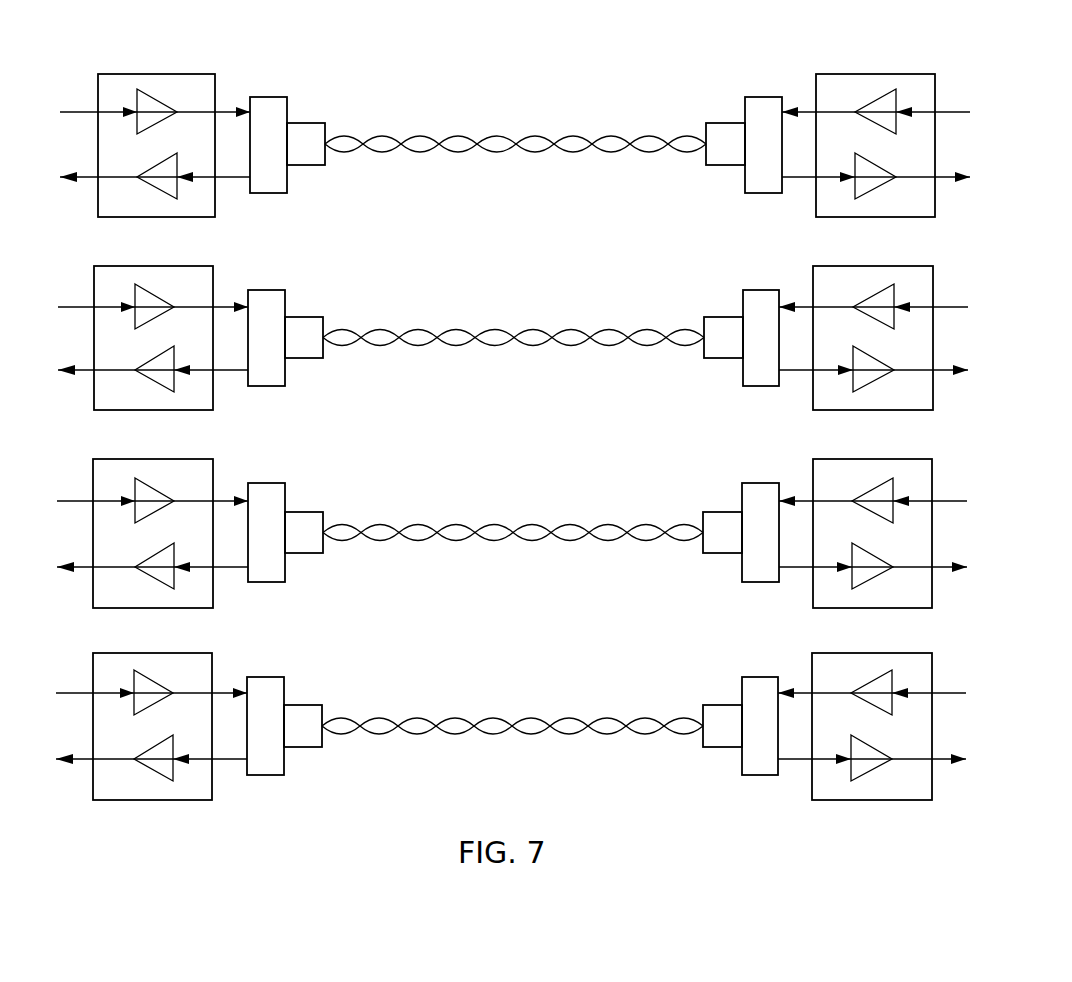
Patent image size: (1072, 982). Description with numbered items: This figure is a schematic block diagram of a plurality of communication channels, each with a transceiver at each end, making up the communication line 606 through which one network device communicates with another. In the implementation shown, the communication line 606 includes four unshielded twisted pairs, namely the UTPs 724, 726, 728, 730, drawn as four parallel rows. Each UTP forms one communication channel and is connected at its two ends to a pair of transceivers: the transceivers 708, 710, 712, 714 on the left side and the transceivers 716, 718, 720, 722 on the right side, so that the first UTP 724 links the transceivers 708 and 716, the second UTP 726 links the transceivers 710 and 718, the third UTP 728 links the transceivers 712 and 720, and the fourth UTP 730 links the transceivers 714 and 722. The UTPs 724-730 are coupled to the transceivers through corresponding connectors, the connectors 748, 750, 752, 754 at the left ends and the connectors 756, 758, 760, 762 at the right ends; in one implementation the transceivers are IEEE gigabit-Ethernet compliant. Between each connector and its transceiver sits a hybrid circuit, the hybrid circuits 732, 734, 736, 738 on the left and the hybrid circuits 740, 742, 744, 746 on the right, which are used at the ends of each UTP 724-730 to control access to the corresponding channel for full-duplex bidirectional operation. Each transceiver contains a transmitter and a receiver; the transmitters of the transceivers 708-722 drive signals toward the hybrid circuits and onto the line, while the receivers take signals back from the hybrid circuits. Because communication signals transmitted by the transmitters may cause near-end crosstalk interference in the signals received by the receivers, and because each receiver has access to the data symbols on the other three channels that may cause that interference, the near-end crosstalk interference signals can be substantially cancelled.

The communication line 606 is at (455, 45).
The transceiver 708 is at (117, 74).
The transceiver 710 is at (115, 266).
The transceiver 712 is at (113, 459).
The transceiver 714 is at (113, 653).
The transceiver 716 is at (908, 74).
The transceiver 718 is at (906, 266).
The transceiver 720 is at (905, 459).
The transceiver 722 is at (904, 653).
The UTP 724 is at (511, 137).
The UTP 726 is at (511, 329).
The UTP 728 is at (511, 524).
The UTP 730 is at (506, 718).
The hybrid circuit 732 is at (270, 97).
The hybrid circuit 734 is at (270, 290).
The hybrid circuit 736 is at (270, 483).
The hybrid circuit 738 is at (268, 677).
The hybrid circuit 740 is at (766, 97).
The hybrid circuit 742 is at (764, 290).
The hybrid circuit 744 is at (763, 483).
The hybrid circuit 746 is at (762, 677).
The connector 748 is at (306, 123).
The connector 750 is at (305, 317).
The connector 752 is at (305, 512).
The connector 754 is at (304, 705).
The connector 756 is at (715, 123).
The connector 758 is at (713, 317).
The connector 760 is at (712, 512).
The connector 762 is at (710, 705).